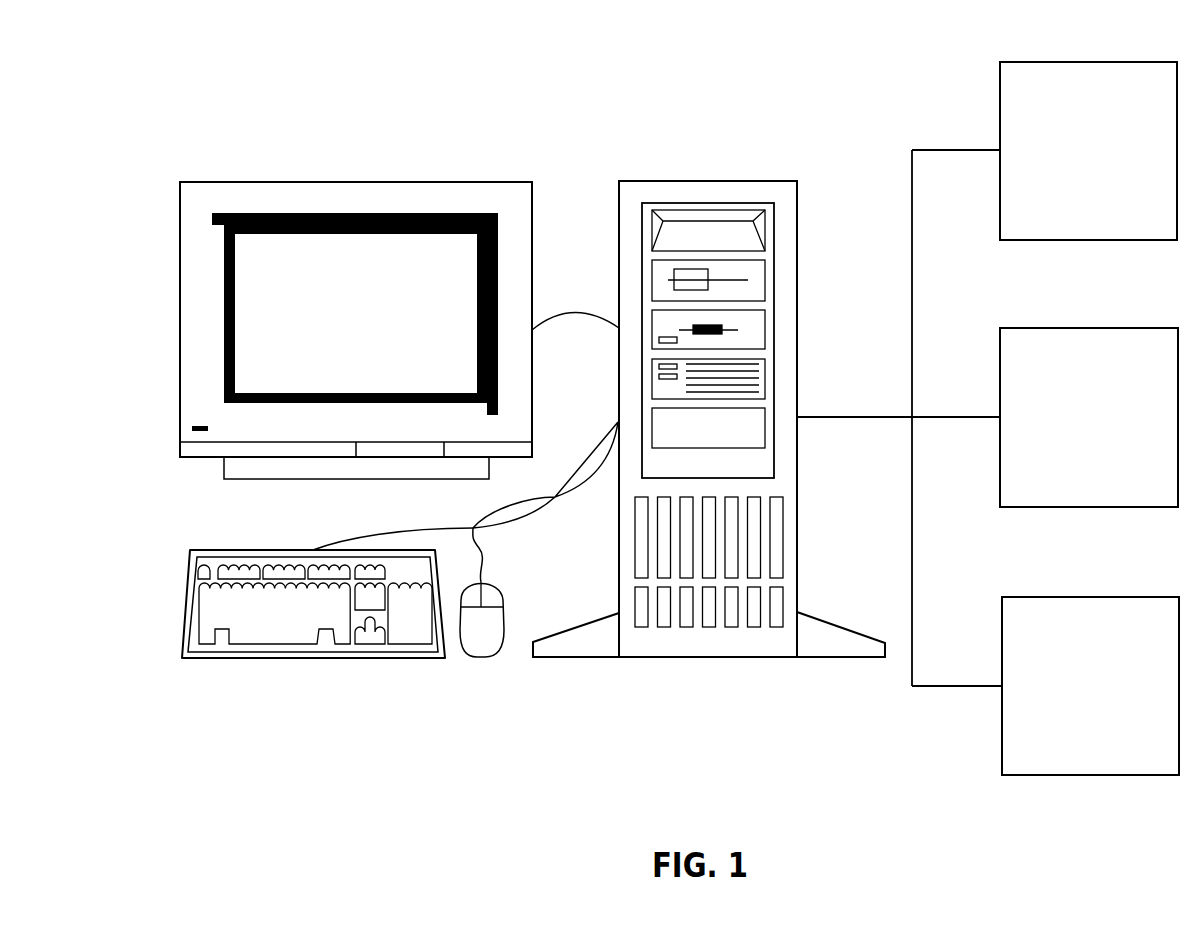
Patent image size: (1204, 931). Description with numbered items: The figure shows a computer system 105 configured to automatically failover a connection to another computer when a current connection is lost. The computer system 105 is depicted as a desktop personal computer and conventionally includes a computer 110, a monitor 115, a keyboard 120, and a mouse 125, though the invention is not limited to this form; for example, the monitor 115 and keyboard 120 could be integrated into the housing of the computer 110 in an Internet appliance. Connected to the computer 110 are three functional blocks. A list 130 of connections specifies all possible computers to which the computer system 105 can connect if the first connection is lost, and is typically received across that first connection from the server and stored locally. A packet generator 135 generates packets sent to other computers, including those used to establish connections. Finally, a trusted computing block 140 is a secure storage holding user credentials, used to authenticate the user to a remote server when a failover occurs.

The computer system 105 is at (108, 112).
The computer 110 is at (668, 181).
The monitor 115 is at (227, 182).
The keyboard 120 is at (228, 658).
The mouse 125 is at (480, 657).
The list of connections 130 is at (1045, 62).
The packet generator 135 is at (1045, 328).
The trusted computing block 140 is at (1045, 597).